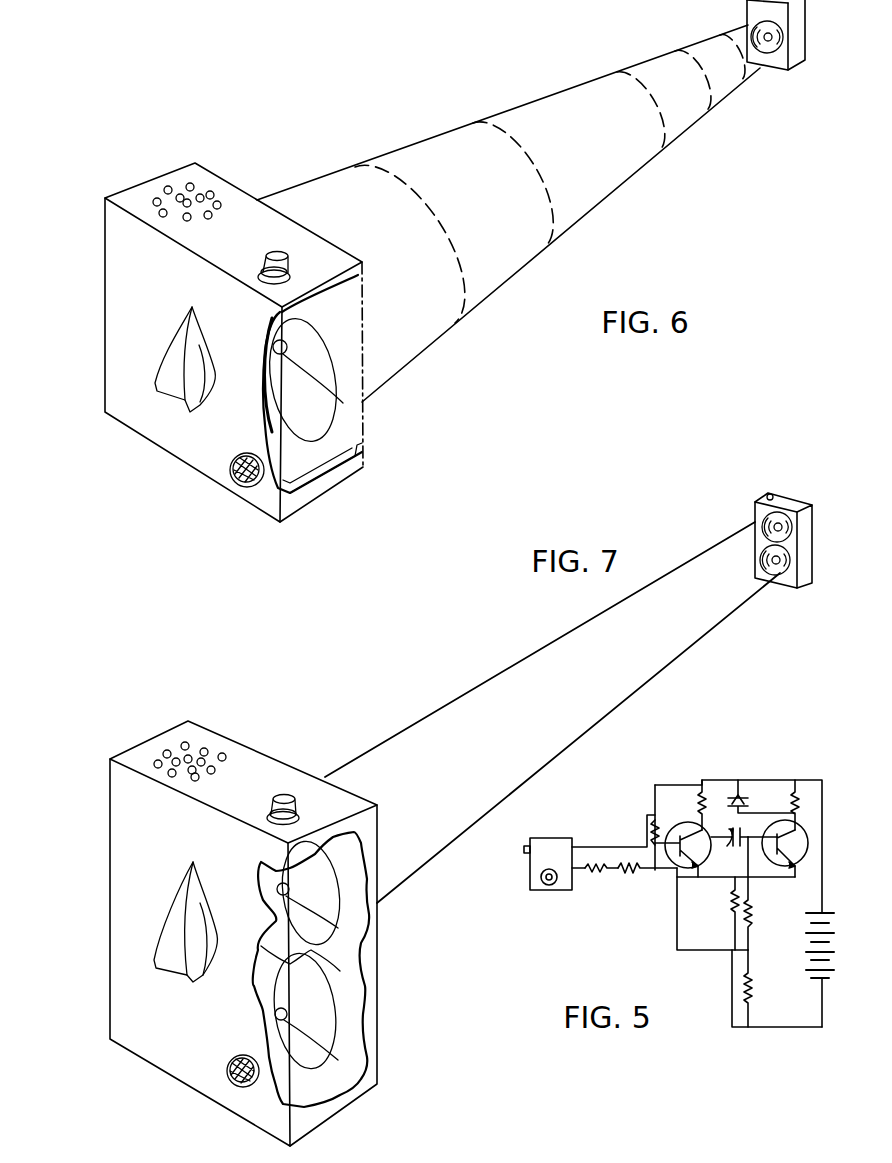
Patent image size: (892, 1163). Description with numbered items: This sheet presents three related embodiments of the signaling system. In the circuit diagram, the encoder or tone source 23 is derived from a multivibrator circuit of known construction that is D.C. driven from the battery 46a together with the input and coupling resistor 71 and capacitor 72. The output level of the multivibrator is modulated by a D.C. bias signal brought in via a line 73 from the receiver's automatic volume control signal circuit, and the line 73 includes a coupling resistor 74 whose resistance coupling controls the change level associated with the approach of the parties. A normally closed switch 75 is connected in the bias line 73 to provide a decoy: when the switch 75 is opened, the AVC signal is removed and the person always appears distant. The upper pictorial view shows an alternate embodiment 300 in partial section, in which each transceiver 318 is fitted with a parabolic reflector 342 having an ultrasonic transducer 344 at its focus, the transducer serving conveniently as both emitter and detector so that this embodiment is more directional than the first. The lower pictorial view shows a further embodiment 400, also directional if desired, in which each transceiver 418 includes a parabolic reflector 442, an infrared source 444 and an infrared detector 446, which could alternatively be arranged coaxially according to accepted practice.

In FIG. 6, the alternate embodiment 300 is at (241, 135).
In FIG. 6, the transceiver 318 is at (809, 45).
In FIG. 6, the ultrasonic transducer 344 is at (332, 403).
In FIG. 6, the parabolic reflector 342 is at (315, 433).
In FIG. 7, the further embodiment 400 is at (255, 714).
In FIG. 7, the transceiver 418 is at (815, 505).
In FIG. 7, the parabolic reflector 442 is at (300, 900).
In FIG. 7, the infrared source 444 is at (315, 918).
In FIG. 7, the infrared detector 446 is at (290, 1020).
In FIG. 5, the line 73 is at (582, 868).
In FIG. 5, the normally closed switch 75 is at (594, 868).
In FIG. 5, the coupling resistor 74 is at (632, 868).
In FIG. 5, the input and coupling resistor 71 is at (732, 900).
In FIG. 5, the input and coupling capacitor 72 is at (729, 851).
In FIG. 5, the battery 46a is at (812, 978).
In FIG. 5, the encoder or tone source 23 is at (753, 1029).